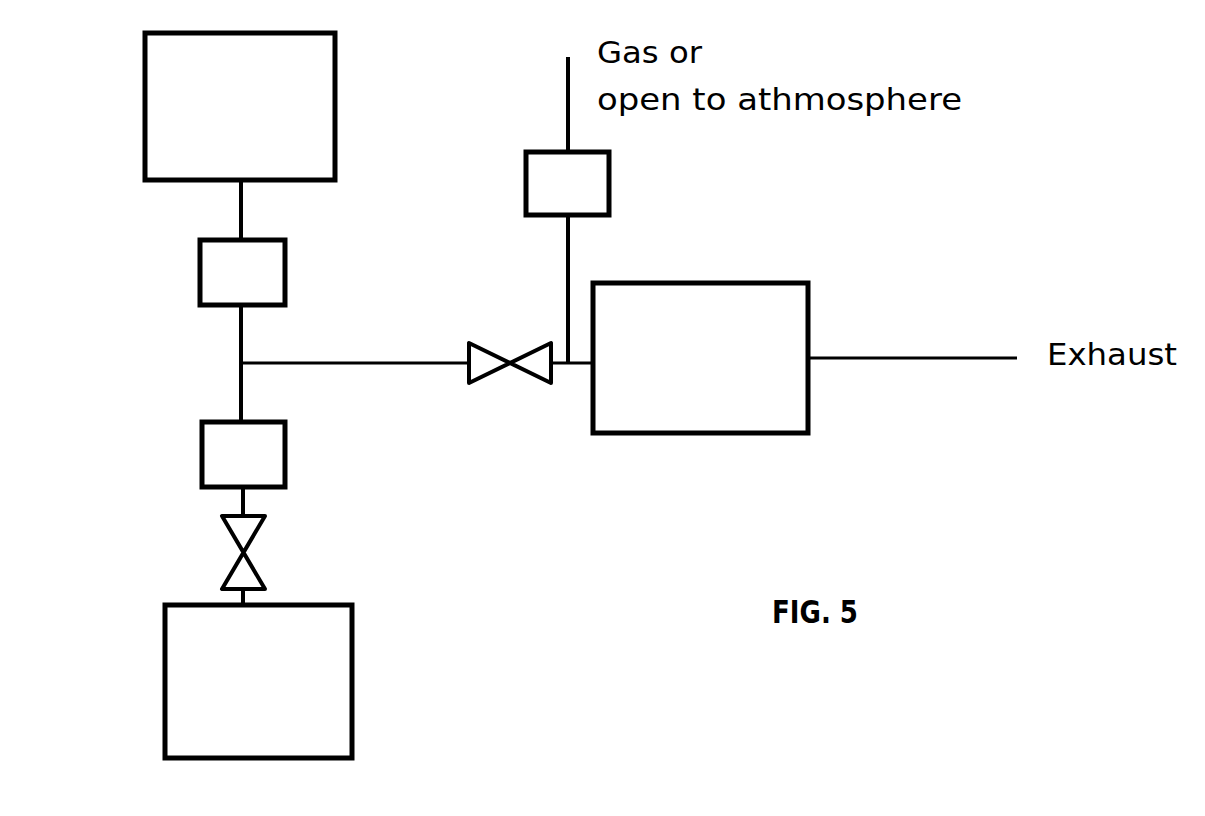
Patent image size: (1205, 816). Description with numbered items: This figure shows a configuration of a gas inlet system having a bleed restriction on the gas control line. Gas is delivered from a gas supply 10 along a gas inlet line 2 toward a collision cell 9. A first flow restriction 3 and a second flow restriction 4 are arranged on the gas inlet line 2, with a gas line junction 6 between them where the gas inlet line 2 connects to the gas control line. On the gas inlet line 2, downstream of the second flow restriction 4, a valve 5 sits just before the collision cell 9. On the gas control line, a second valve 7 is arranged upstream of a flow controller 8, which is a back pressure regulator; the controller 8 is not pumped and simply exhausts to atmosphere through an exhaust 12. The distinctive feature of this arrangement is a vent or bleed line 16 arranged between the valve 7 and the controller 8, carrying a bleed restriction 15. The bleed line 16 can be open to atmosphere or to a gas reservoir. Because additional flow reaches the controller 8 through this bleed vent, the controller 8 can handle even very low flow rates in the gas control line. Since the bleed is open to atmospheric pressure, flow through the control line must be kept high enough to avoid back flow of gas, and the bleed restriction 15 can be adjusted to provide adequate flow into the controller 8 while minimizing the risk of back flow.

The gas supply 10 is at (270, 106).
The gas inlet line 2 is at (254, 210).
The first flow restriction 3 is at (259, 272).
The gas line junction 6 is at (329, 363).
The second flow restriction 4 is at (261, 468).
The valve 5 is at (264, 560).
The collision cell 9 is at (277, 681).
The valve 7 is at (531, 389).
The vent or bleed line 16 is at (540, 289).
The bleed restriction 15 is at (543, 136).
The flow controller 8 is at (700, 336).
The exhaust 12 is at (912, 336).